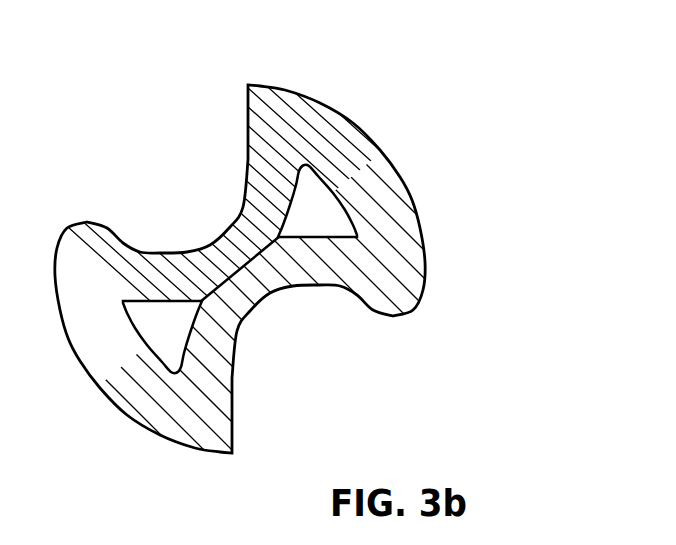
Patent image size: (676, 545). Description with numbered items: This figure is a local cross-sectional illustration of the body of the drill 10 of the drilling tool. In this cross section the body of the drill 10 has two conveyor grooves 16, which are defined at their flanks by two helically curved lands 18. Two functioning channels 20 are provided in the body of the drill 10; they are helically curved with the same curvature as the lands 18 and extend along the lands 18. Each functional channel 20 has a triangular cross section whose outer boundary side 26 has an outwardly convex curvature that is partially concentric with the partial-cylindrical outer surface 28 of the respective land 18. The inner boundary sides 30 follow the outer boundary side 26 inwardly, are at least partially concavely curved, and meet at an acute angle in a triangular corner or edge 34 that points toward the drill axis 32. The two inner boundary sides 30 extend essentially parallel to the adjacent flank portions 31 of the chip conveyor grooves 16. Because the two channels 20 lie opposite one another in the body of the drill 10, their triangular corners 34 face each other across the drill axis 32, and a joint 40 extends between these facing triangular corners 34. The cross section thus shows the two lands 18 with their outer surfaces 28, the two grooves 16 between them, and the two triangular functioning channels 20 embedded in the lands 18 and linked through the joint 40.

The body of the drill 10 is at (410, 197).
The conveyor grooves 16 is at (247, 127).
The lands 18 is at (365, 150).
The functioning channels 20 is at (317, 212).
The outer boundary side 26 is at (326, 175).
The outer surface 28 is at (390, 160).
The inner boundary sides 30 is at (292, 190).
The flank portions 31 is at (127, 240).
The drill axis 32 is at (228, 265).
The triangular corner 34 is at (287, 238).
The joint 40 is at (247, 277).